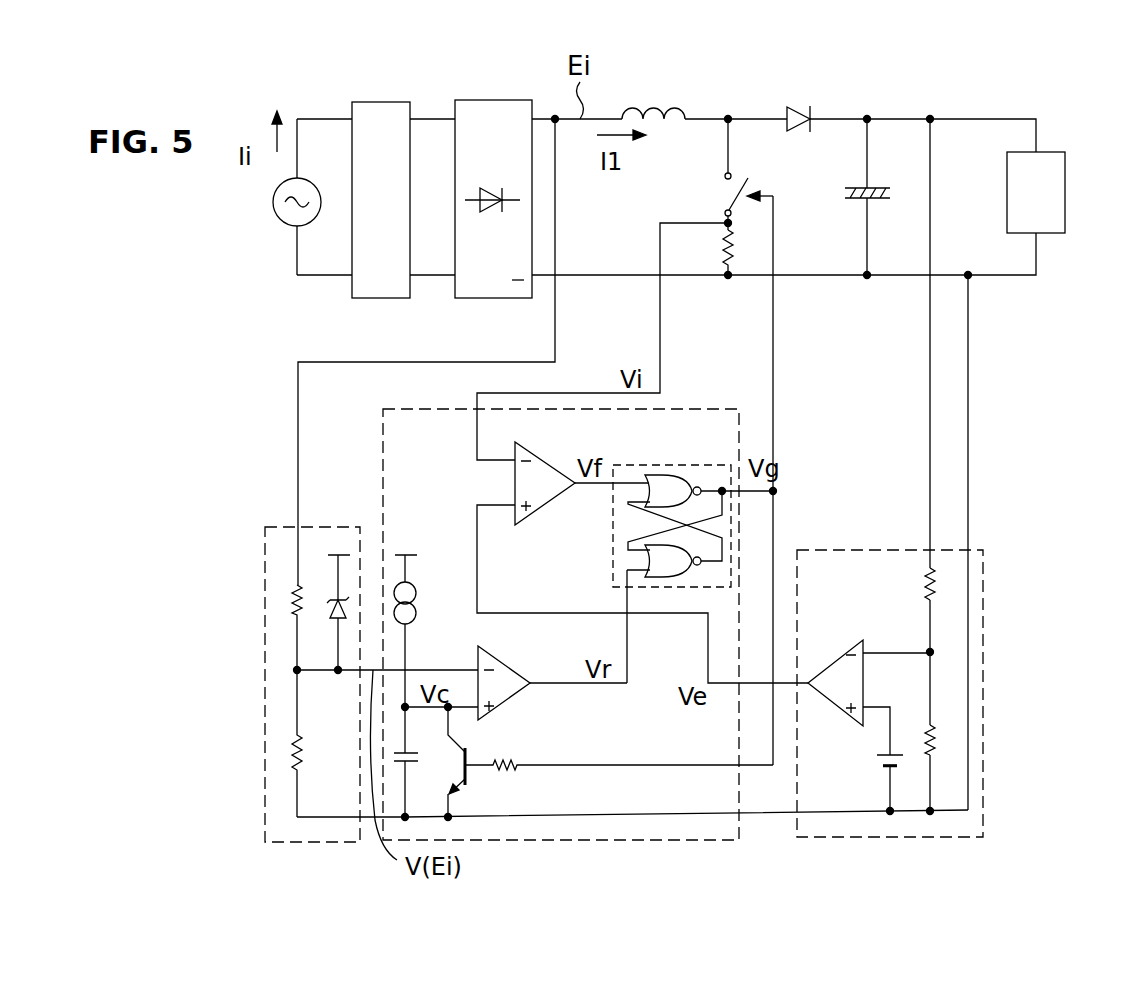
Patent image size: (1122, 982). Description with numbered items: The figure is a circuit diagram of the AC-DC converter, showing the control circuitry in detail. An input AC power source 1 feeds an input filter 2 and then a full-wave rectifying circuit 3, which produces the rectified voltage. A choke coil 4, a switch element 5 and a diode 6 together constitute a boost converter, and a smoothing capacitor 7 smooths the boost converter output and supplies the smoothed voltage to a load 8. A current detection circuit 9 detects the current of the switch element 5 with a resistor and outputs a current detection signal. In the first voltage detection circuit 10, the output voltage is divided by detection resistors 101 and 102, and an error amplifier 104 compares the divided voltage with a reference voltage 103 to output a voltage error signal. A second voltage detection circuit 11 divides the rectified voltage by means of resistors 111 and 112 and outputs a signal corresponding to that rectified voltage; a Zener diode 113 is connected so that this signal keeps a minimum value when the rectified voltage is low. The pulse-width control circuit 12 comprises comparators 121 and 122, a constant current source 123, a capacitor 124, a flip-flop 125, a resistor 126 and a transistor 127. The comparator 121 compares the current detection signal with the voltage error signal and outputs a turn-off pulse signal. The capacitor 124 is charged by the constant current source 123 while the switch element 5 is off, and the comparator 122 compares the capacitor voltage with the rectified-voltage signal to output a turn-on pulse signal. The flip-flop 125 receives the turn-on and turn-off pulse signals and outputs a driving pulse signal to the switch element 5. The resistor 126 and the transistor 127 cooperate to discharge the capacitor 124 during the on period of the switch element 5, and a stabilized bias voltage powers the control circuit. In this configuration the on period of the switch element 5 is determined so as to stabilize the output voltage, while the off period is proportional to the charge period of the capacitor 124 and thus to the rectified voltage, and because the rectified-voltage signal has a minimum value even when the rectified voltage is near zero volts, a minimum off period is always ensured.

The input AC power source 1 is at (272, 211).
The input filter 2 is at (378, 298).
The full-wave rectifying circuit 3 is at (493, 298).
The choke coil 4 is at (655, 106).
The switch element 5 is at (726, 196).
The diode 6 is at (797, 105).
The smoothing capacitor 7 is at (876, 187).
The load 8 is at (1066, 172).
The current detection circuit 9 is at (739, 236).
The voltage detection circuit 10 is at (871, 548).
The second voltage detection circuit 11 is at (263, 538).
The pulse-width control circuit 12 is at (693, 405).
The detection resistor 101 is at (939, 585).
The detection resistor 102 is at (938, 739).
The reference voltage 103 is at (881, 763).
The error amplifier 104 is at (826, 654).
The resistor 111 is at (292, 606).
The resistor 112 is at (293, 758).
The Zener diode 113 is at (331, 605).
The comparator 121 is at (544, 460).
The comparator 122 is at (514, 671).
The constant current source 123 is at (443, 580).
The capacitor 124 is at (410, 763).
The flip-flop 125 is at (613, 515).
The resistor 126 is at (516, 761).
The transistor 127 is at (471, 771).